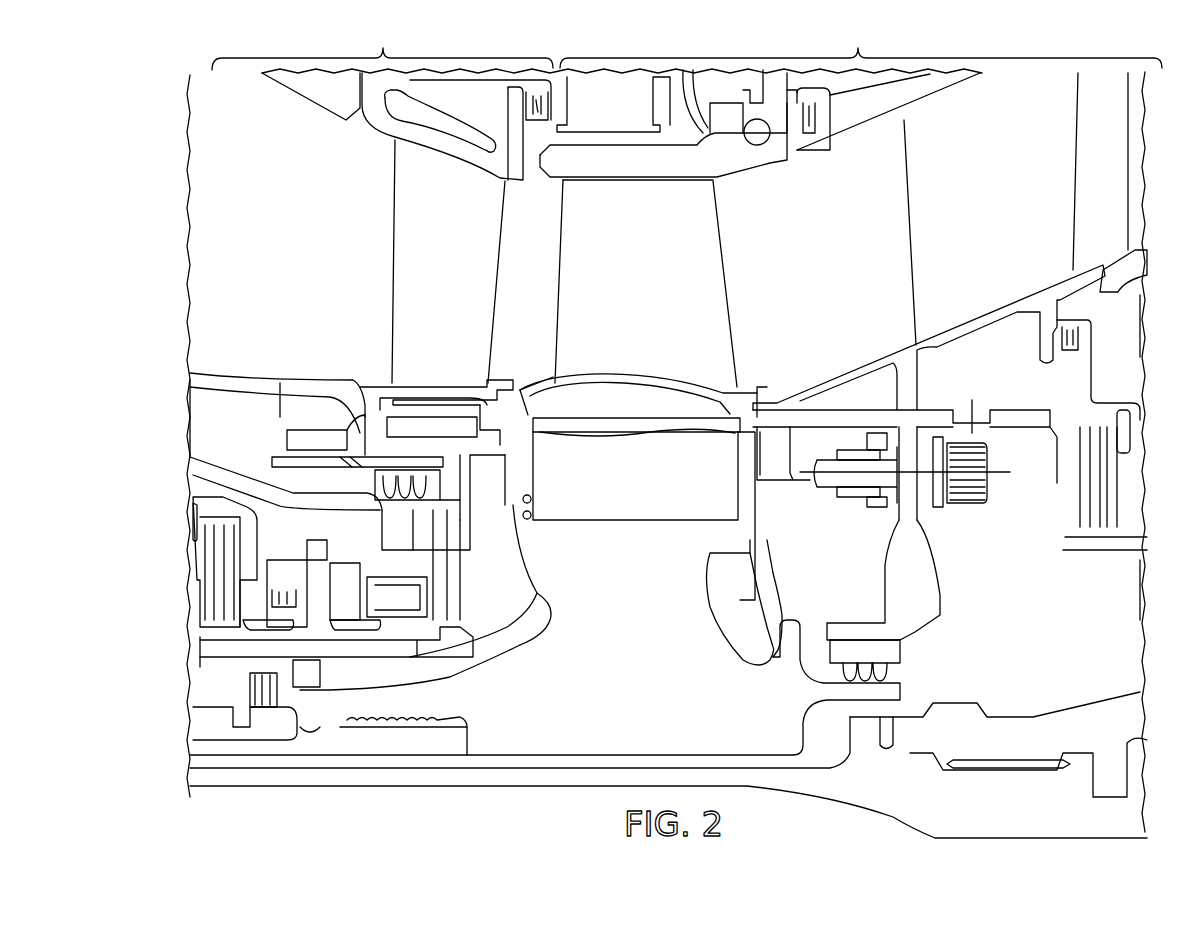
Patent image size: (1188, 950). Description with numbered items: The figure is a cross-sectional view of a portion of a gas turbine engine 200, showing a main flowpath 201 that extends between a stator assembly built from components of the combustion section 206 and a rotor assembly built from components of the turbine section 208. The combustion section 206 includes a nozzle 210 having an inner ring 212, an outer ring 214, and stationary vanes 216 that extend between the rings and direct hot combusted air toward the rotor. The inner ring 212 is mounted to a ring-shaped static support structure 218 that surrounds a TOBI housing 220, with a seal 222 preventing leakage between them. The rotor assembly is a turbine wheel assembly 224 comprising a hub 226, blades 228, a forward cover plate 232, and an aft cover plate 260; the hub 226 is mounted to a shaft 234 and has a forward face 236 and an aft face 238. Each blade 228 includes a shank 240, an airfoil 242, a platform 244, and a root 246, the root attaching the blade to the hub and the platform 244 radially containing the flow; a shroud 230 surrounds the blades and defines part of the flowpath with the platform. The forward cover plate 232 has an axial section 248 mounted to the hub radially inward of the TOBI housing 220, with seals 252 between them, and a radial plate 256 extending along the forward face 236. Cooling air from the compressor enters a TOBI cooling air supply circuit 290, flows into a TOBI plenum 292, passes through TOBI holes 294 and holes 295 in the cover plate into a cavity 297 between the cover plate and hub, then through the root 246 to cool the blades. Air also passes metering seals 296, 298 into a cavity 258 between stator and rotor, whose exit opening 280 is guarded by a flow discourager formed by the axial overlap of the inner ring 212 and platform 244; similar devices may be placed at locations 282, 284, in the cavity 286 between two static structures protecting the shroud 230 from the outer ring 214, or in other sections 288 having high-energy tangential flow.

The gas turbine engine 200 is at (982, 47).
The main flowpath 201 is at (276, 287).
The combustion section 206 is at (382, 47).
The turbine section 208 is at (861, 46).
The nozzle 210 is at (493, 150).
The inner ring 212 is at (380, 392).
The outer ring 214 is at (378, 125).
The stationary vanes 216 is at (398, 222).
The static support structure 218 is at (421, 458).
The TOBI housing 220 is at (373, 507).
The seal 222 is at (377, 483).
The turbine wheel assembly 224 is at (652, 170).
The hub 226 is at (580, 750).
The blades 228 is at (665, 277).
The shroud 230 is at (595, 160).
The forward cover plate 232 is at (523, 628).
The shaft 234 is at (393, 740).
The forward face 236 is at (547, 603).
The aft face 238 is at (713, 612).
The shank 240 is at (677, 427).
The airfoil 242 is at (707, 200).
The platform 244 is at (640, 381).
The root 246 is at (677, 503).
The axial section 248 is at (386, 598).
The seals 252 is at (267, 640).
The radial plate 256 is at (522, 520).
The cavity 258 is at (488, 596).
The aft cover plate 260 is at (767, 587).
The exit opening 280 is at (550, 380).
The location 282 is at (765, 400).
The location 284 is at (1107, 270).
The cavity between two static structures 286 is at (538, 176).
The other sections 288 is at (777, 483).
The TOBI cooling air supply circuit 290 is at (207, 487).
The TOBI plenum 292 is at (297, 547).
The TOBI holes 294 is at (317, 593).
The holes 295 is at (317, 650).
The metering seal 296 is at (360, 633).
The cavity 297 is at (343, 677).
The metering seal 298 is at (430, 617).